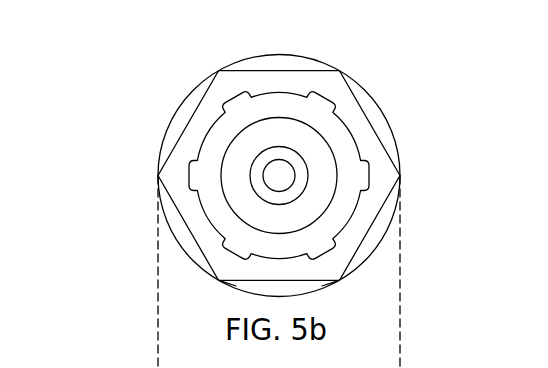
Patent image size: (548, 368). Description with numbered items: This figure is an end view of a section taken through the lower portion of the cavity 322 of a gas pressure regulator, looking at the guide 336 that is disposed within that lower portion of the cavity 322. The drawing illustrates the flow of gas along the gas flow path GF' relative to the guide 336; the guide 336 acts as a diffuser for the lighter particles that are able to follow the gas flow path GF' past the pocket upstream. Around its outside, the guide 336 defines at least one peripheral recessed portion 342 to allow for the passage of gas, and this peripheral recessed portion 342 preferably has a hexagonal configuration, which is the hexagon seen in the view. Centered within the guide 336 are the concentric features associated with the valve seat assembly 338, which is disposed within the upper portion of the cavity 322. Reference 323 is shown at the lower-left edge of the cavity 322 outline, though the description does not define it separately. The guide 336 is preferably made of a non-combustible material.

The cavity 322 is at (250, 188).
The cylindrical outer surface 323 is at (165, 212).
The guide 336 is at (283, 83).
The valve seat assembly 338 is at (317, 195).
The peripheral recessed portion 342 is at (374, 116).
The gas flow path GF' is at (250, 176).